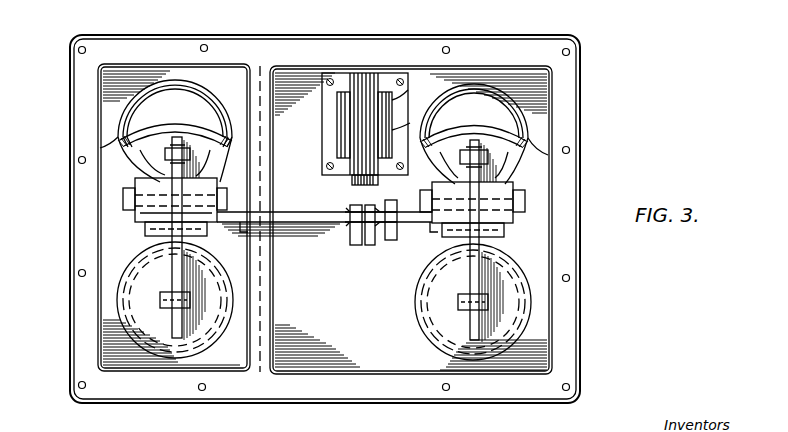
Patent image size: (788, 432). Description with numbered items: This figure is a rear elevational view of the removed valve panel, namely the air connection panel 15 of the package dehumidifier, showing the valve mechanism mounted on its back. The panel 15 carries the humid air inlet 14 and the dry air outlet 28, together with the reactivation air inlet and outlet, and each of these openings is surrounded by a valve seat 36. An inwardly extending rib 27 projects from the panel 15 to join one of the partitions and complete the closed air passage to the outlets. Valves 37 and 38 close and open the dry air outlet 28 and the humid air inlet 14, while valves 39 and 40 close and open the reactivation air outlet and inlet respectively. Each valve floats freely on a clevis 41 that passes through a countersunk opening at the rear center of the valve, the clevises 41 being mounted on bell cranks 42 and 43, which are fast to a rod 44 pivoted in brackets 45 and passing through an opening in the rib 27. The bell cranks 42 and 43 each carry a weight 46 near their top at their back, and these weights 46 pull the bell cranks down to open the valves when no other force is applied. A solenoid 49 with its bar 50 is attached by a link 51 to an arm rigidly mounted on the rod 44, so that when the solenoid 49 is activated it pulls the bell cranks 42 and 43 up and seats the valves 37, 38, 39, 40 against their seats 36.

The humid air inlet 14 is at (475, 98).
The air connection panel 15 is at (250, 385).
The rib 27 is at (270, 287).
The dry air outlet 28 is at (160, 100).
The valve seats 36 is at (215, 97).
The valve 37 is at (118, 140).
The valve 38 is at (562, 143).
The valve 39 is at (110, 303).
The valve 40 is at (533, 315).
The clevis 41 is at (458, 298).
The bell crank 42 is at (150, 232).
The bell crank 43 is at (507, 234).
The rod 44 is at (313, 210).
The brackets 45 is at (210, 237).
The weight 46 is at (135, 180).
The solenoid 49 is at (326, 160).
The bar 50 is at (385, 190).
The link 51 is at (355, 233).